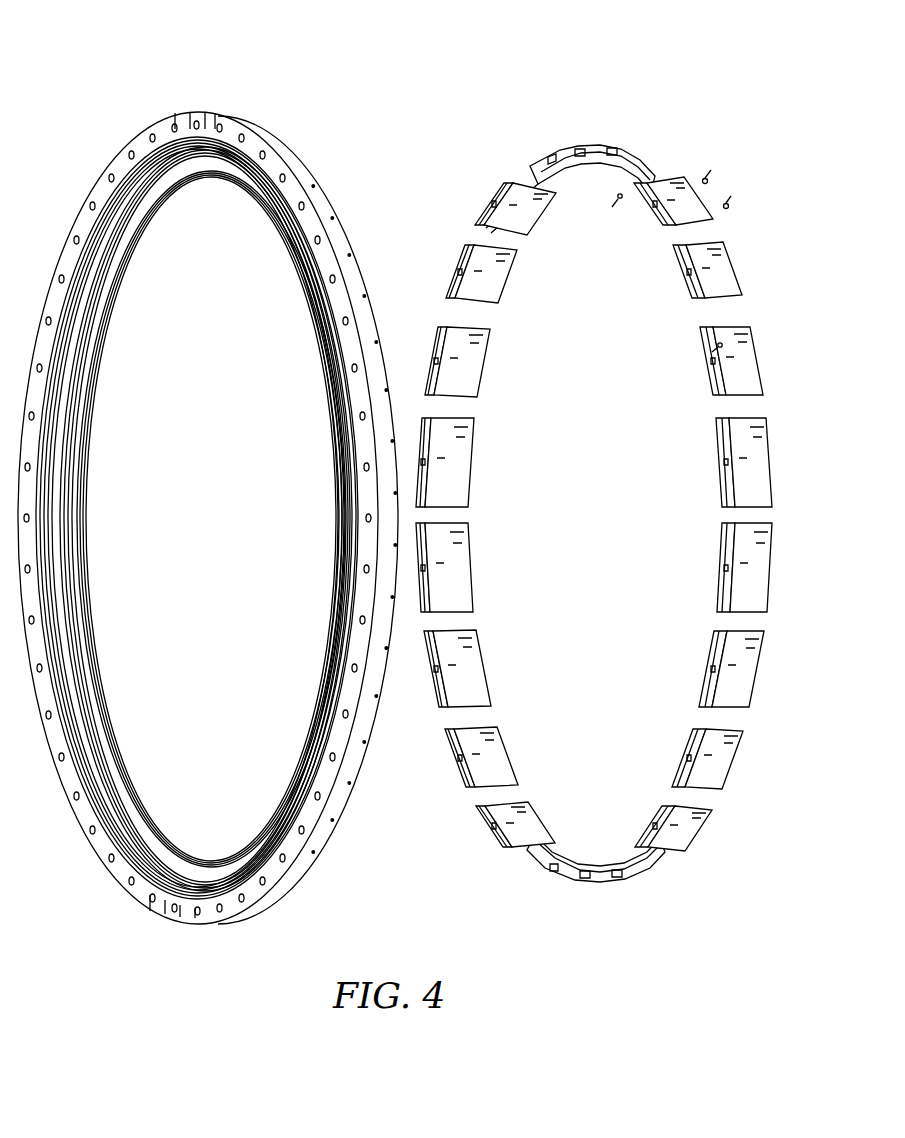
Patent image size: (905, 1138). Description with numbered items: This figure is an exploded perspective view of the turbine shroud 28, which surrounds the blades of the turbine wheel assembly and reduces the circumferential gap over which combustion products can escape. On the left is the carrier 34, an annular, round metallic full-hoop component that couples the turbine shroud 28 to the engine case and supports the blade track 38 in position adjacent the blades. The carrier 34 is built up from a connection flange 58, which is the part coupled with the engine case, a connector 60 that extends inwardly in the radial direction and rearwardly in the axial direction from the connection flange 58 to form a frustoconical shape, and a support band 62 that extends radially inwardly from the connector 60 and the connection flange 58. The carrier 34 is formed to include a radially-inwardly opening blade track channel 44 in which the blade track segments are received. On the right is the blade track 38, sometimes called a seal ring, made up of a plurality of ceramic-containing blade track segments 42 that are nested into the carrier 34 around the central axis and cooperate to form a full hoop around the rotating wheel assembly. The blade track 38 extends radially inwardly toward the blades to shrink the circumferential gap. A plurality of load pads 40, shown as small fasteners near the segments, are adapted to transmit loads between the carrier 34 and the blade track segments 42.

The turbine shroud 28 is at (604, 444).
The carrier 34 is at (208, 483).
The blade track 38 is at (597, 124).
The load pads 40 is at (707, 170).
The blade track segments 42 is at (652, 221).
The blade track channel 44 is at (167, 200).
The connection flange 58 is at (98, 192).
The connector 60 is at (112, 233).
The support band 62 is at (325, 218).